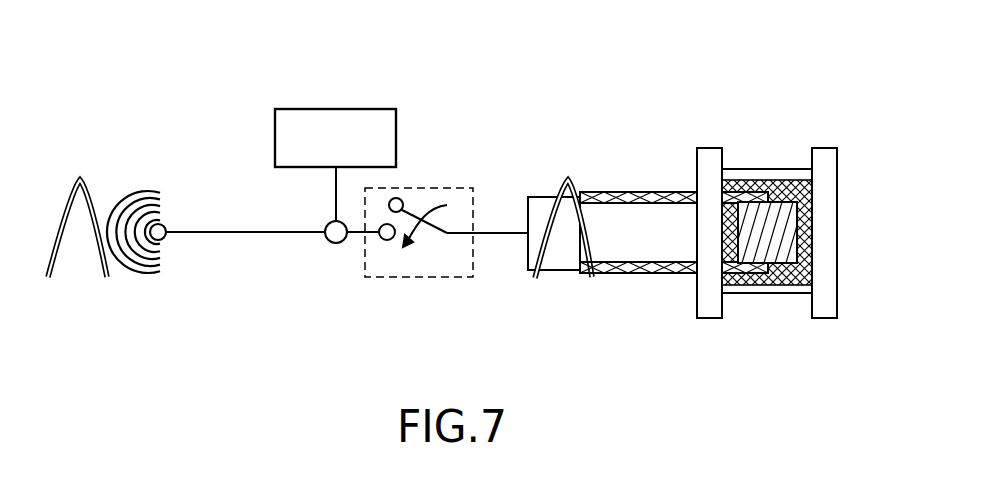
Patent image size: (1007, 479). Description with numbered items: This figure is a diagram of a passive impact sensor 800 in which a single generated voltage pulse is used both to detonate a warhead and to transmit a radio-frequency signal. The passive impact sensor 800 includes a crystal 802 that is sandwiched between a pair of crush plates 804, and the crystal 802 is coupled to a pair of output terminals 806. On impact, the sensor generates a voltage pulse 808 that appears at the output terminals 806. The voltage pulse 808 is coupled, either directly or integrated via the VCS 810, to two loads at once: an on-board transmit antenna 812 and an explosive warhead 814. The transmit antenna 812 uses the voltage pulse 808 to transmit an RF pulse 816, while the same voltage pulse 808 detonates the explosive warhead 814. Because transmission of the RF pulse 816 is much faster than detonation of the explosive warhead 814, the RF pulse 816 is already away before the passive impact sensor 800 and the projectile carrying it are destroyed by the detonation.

The passive impact sensor 800 is at (750, 75).
The crystal 802 is at (775, 252).
The crush plates 804 is at (825, 148).
The output terminals 806 is at (615, 190).
The voltage pulse 808 is at (557, 180).
The VCS 810 is at (440, 188).
The on-board transmit antenna 812 is at (130, 270).
The explosive warhead 814 is at (373, 110).
The RF pulse 816 is at (92, 187).